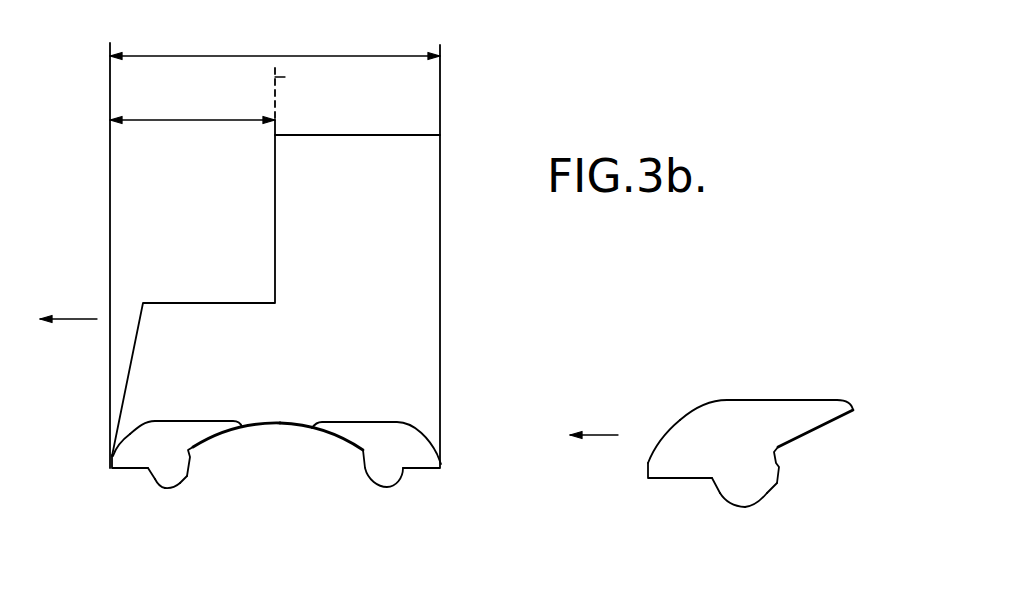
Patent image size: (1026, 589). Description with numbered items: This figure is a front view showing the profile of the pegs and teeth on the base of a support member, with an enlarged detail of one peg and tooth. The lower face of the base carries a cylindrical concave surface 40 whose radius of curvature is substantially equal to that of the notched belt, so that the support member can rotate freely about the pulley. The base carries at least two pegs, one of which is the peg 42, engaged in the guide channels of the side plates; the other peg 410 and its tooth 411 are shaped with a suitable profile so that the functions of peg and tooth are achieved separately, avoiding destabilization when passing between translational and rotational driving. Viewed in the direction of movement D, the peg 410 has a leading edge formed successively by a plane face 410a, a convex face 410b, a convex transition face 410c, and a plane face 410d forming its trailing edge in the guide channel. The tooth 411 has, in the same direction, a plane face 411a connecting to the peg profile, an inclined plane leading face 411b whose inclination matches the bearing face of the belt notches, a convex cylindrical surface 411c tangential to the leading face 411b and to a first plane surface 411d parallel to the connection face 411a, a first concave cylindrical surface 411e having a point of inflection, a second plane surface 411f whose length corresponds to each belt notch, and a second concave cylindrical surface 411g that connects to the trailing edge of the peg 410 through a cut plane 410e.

The cylindrical concave surface 40 is at (298, 427).
The peg 42 is at (397, 450).
The peg 410 is at (461, 397).
The plane face 410a is at (110, 461).
The convex face 410b is at (123, 442).
The convex transition face 410c is at (155, 418).
The plane face 410d is at (183, 420).
The cut plane 410e is at (853, 407).
The tooth 411 is at (461, 493).
The plane face 411a is at (148, 473).
The plane leading face 411b is at (152, 478).
The convex cylindrical surface 411c is at (153, 482).
The first plane surface 411d is at (167, 488).
The first concave cylindrical surface 411e is at (187, 478).
The second plane surface 411f is at (193, 457).
The second concave cylindrical surface 411g is at (228, 437).